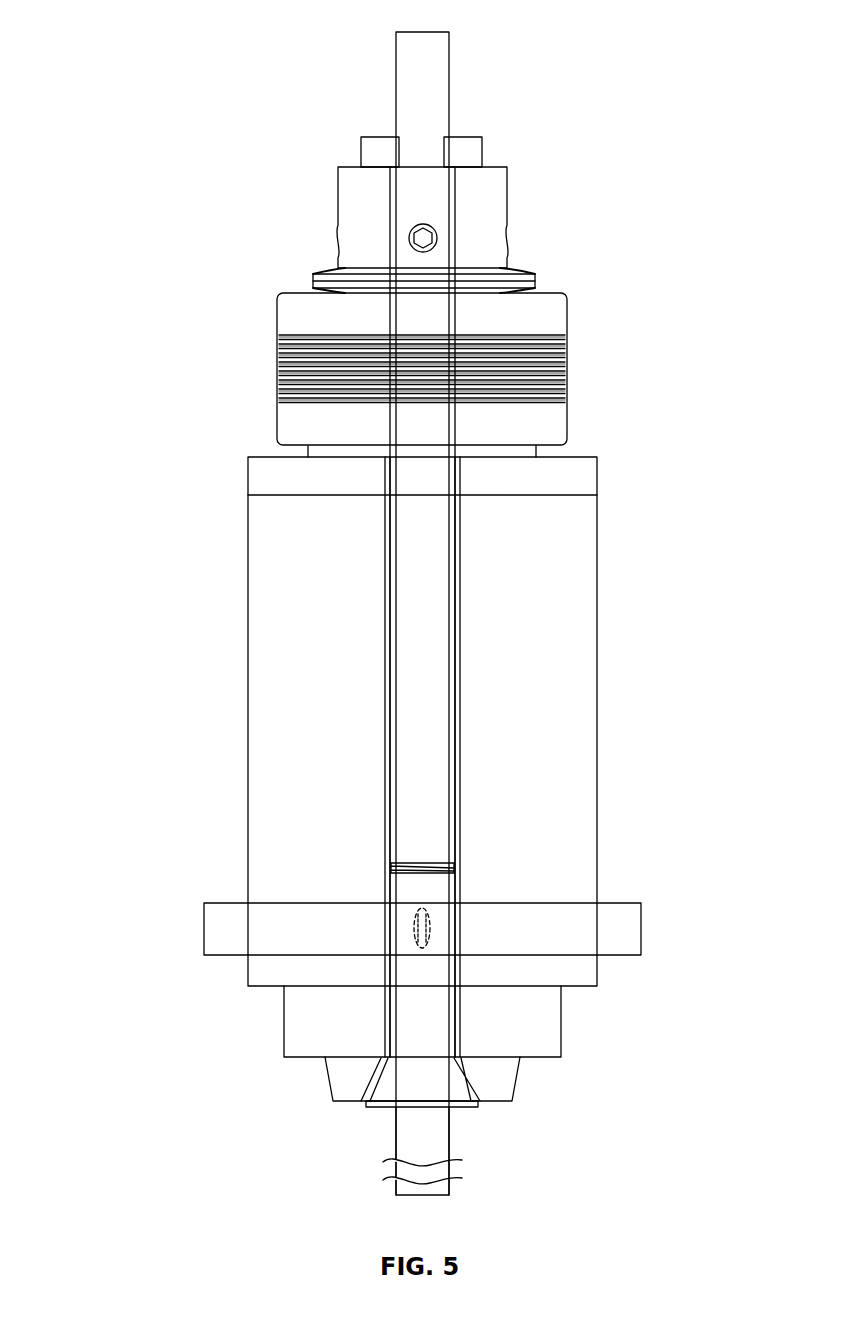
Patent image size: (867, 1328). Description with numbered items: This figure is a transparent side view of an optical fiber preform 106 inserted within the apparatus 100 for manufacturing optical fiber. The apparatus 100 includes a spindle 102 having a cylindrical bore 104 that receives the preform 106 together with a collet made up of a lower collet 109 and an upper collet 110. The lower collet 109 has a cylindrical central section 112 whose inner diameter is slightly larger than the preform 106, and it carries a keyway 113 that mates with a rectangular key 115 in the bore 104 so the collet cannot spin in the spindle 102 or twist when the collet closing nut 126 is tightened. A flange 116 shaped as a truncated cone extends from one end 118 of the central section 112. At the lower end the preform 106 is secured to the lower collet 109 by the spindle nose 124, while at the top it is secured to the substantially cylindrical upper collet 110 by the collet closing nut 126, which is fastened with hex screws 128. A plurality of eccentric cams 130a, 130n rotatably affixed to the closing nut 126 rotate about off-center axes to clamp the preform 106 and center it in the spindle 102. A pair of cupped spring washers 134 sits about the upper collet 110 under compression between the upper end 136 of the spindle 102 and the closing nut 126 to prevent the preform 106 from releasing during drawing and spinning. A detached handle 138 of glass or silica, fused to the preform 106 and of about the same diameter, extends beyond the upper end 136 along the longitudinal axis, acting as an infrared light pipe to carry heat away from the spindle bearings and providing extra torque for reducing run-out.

The apparatus 100 is at (147, 33).
The spindle 102 is at (248, 680).
The cylindrical bore 104 is at (388, 577).
The optical fiber preform 106 is at (395, 883).
The lower collet 109 is at (377, 1078).
The upper collet 110 is at (391, 633).
The central section 112 is at (442, 915).
The keyway 113 is at (432, 935).
The rectangular key 115 is at (414, 928).
The flange 116 is at (462, 1087).
The end of the central section 118 is at (460, 1107).
The spindle nose 124 is at (283, 1037).
The collet closing nut 126 is at (508, 204).
The hex screws 128 is at (418, 238).
The eccentric cam 130a is at (381, 136).
The eccentric cam 130n is at (463, 136).
The cupped spring washers 134 is at (535, 278).
The upper end of the spindle 136 is at (560, 295).
The handle 138 is at (449, 71).